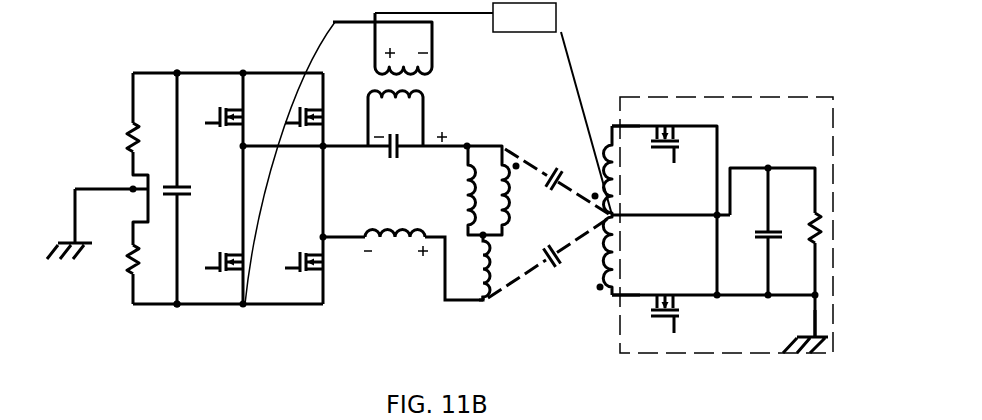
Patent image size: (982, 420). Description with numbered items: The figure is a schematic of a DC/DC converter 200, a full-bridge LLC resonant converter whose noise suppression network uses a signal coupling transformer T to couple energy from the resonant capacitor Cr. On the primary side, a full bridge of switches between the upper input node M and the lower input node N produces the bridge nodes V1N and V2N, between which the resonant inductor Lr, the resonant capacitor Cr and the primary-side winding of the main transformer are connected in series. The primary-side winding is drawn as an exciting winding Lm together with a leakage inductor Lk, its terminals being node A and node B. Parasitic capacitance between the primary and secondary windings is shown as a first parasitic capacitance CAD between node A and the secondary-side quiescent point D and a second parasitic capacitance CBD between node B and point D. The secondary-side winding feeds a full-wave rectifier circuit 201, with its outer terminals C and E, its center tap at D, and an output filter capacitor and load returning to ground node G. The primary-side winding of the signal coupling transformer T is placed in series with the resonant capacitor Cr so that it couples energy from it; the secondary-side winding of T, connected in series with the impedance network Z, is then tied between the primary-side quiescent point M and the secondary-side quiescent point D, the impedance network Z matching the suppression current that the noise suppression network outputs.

The DC/DC converter 200 is at (97, 35).
The rectifier circuit 201 is at (724, 90).
The signal coupling transformer T is at (349, 158).
The resonant capacitor Cr is at (410, 133).
The resonant inductor Lr is at (396, 248).
The exciting winding Lm is at (472, 192).
The leakage inductor Lk is at (471, 267).
The impedance network Z is at (493, 109).
The first parasitic capacitance CAD is at (558, 177).
The second parasitic capacitance CBD is at (550, 261).
The first bridge node V1N is at (327, 147).
The second bridge node V2N is at (375, 262).
The primary-side quiescent point M is at (175, 59).
The negative input node N is at (174, 318).
The node A is at (466, 134).
The node B is at (481, 313).
The node C is at (627, 147).
The secondary-side quiescent point D is at (671, 204).
The node E is at (628, 280).
The ground node G is at (788, 323).